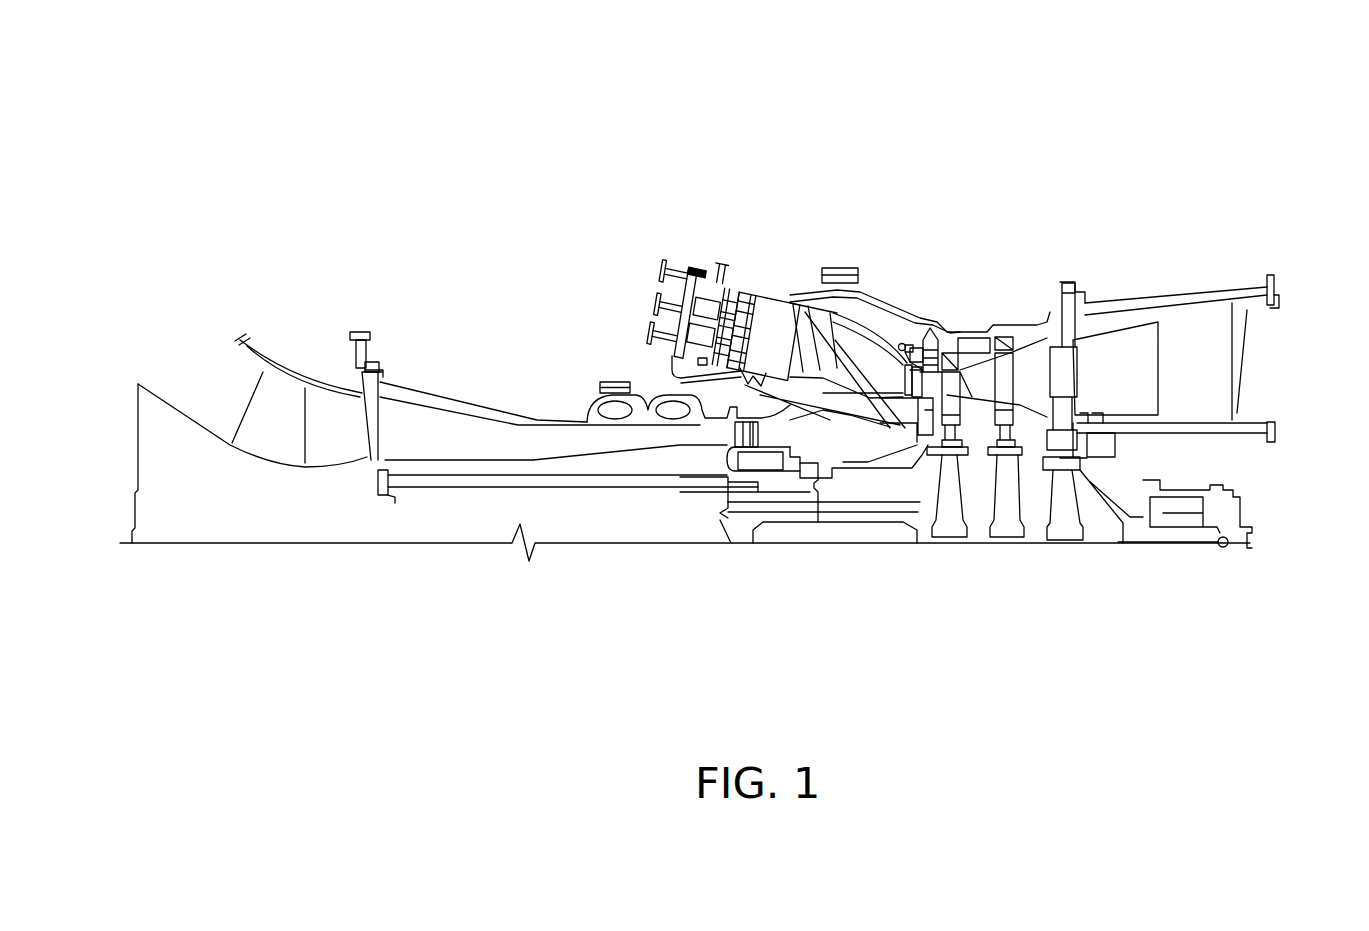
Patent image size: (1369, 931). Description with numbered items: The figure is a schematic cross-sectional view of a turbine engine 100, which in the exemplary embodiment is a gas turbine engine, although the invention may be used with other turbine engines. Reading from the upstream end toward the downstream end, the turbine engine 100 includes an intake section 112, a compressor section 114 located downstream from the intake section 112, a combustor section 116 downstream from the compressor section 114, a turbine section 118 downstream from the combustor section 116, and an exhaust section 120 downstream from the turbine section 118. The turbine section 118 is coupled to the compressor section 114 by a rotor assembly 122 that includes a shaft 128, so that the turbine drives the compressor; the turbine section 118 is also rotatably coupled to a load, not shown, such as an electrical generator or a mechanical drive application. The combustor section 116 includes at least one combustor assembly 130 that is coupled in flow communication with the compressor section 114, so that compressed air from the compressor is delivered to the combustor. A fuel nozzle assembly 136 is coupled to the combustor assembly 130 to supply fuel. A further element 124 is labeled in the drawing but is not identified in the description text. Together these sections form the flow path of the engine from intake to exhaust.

The turbine engine 100 is at (330, 110).
The intake section 112 is at (172, 325).
The compressor section 114 is at (473, 398).
The combustor section 116 is at (883, 300).
The turbine section 118 is at (1050, 322).
The exhaust section 120 is at (1256, 243).
The rotor assembly 122 is at (552, 580).
The shaft 128 is at (392, 503).
The combustor 124 is at (747, 280).
The combustor assembly 130 is at (812, 240).
The fuel nozzle assembly 136 is at (636, 255).